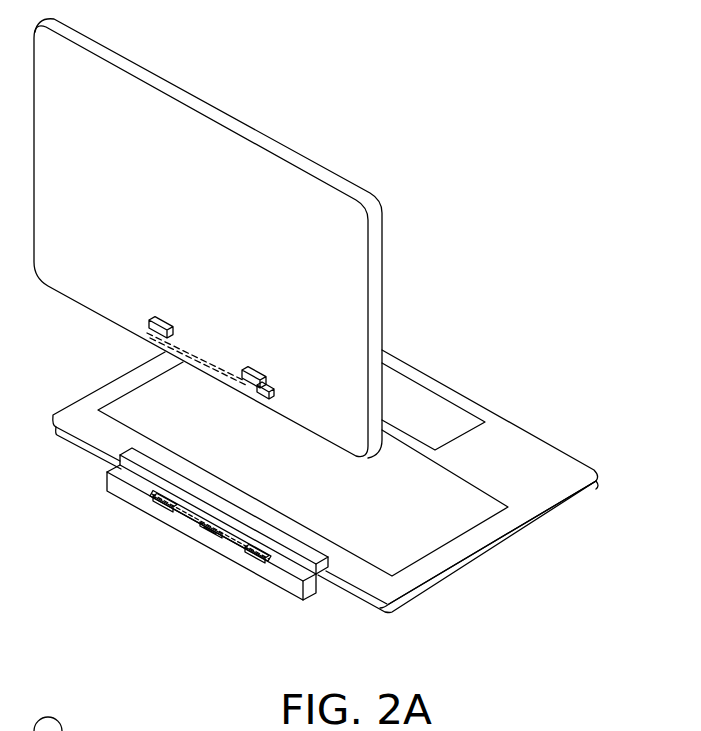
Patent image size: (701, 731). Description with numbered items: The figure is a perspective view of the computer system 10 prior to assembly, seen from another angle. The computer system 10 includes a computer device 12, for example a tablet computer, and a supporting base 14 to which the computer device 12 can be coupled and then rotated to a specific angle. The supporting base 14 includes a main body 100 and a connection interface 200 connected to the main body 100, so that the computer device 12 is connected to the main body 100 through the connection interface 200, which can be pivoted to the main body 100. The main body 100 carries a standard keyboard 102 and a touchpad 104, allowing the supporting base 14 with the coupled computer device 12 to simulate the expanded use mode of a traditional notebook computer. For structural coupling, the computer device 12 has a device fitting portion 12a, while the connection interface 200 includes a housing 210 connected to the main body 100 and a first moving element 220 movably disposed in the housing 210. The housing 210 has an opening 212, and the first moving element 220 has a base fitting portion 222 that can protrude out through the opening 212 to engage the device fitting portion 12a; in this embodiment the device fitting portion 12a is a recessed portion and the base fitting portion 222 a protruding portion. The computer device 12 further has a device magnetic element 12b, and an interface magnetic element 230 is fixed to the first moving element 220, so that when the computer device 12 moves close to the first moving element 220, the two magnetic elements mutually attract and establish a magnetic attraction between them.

The computer system 10 is at (477, 253).
The computer device 12 is at (286, 152).
The device fitting portion 12a is at (200, 368).
The device magnetic element 12b is at (155, 318).
The supporting base 14 is at (478, 580).
The main body 100 is at (512, 452).
The standard keyboard 102 is at (481, 507).
The touchpad 104 is at (437, 410).
The connection interface 200 is at (329, 594).
The housing 210 is at (287, 583).
The opening 212 is at (227, 543).
The first moving element 220 is at (202, 521).
The base fitting portion 222 is at (211, 530).
The interface magnetic element 230 is at (157, 512).